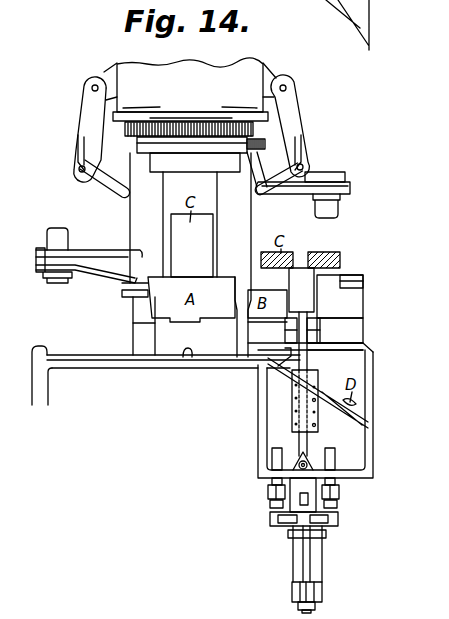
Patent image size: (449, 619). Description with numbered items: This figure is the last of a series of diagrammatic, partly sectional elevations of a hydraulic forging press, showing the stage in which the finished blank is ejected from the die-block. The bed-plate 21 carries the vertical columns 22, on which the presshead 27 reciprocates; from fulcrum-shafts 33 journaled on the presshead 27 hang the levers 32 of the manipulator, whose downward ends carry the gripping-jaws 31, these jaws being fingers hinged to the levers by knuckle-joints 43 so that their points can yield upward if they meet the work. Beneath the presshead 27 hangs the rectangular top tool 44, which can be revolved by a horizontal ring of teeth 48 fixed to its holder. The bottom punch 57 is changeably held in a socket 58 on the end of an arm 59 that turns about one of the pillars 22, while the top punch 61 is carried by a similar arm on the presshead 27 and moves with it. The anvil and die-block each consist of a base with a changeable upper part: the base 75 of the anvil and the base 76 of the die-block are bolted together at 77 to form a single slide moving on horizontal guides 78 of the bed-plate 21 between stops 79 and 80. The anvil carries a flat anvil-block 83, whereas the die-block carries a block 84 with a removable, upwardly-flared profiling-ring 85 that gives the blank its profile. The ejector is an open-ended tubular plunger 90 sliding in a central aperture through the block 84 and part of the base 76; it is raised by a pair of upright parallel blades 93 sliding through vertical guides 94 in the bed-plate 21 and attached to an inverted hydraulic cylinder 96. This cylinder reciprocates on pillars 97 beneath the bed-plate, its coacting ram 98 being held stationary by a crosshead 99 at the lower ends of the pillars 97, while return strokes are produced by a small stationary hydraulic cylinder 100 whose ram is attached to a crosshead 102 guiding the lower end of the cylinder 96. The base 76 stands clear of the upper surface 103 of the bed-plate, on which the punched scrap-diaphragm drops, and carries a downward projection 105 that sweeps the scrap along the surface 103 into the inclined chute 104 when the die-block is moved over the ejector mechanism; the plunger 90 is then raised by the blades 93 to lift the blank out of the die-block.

The bed-plate 21 is at (50, 388).
The vertical columns 22 is at (137, 221).
The presshead 27 is at (192, 68).
The gripping-jaws 31 is at (104, 188).
The levers 32 is at (84, 111).
The fulcrum-shafts 33 is at (93, 84).
The knuckle-joints 43 is at (78, 150).
The top tool 44 is at (185, 172).
The ring of teeth 48 is at (185, 125).
The bottom punch 57 is at (58, 229).
The socket 58 is at (36, 262).
The arm 59 is at (89, 251).
The top punch 61 is at (340, 210).
The base of the anvil 75 is at (163, 336).
The base of the die-block 76 is at (348, 325).
The bolts 77 is at (240, 333).
The horizontal guides 78 is at (83, 356).
The stop 79 is at (40, 350).
The stop 80 is at (360, 347).
The anvil-block 83 is at (163, 305).
The block 84 is at (342, 306).
The profiling-ring 85 is at (359, 280).
The tubular plunger 90 is at (291, 286).
The blades 93 is at (303, 324).
The vertical guides 94 is at (291, 407).
The inverted hydraulic cylinder 96 is at (297, 486).
The pillars 97 is at (305, 552).
The hydraulic ram 98 is at (318, 558).
The crosshead 99 is at (322, 592).
The small stationary hydraulic cylinder 100 is at (268, 492).
The crosshead 102 is at (270, 522).
The upper surface of the bed-plate 103 is at (183, 357).
The inclined chute 104 is at (326, 390).
The downward projection 105 is at (290, 355).